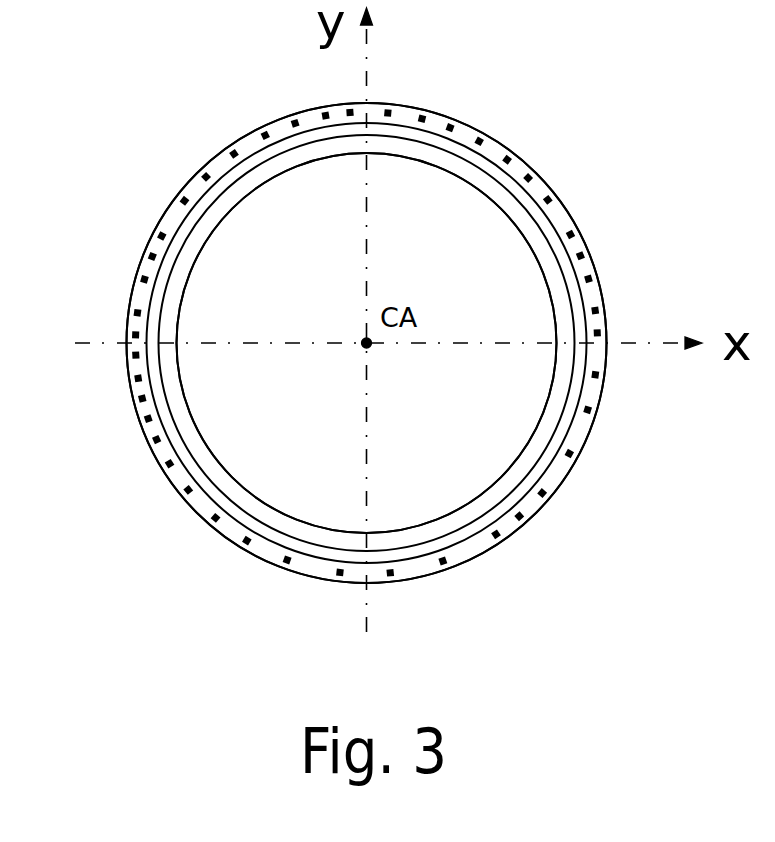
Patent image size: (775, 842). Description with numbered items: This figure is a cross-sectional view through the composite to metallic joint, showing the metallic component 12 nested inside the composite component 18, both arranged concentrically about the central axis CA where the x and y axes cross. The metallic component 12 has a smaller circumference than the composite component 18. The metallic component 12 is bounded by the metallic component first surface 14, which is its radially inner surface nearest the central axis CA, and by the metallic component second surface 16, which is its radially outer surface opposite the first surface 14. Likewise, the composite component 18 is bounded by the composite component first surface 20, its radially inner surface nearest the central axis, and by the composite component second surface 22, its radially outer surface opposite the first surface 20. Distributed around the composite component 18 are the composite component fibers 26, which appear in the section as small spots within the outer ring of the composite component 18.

The metallic component 12 is at (175, 303).
The metallic component first surface 14 is at (189, 283).
The metallic component second surface 16 is at (178, 258).
The composite component 18 is at (562, 202).
The composite component first surface 20 is at (537, 197).
The composite component second surface 22 is at (580, 230).
The composite component fibers 26 is at (527, 149).